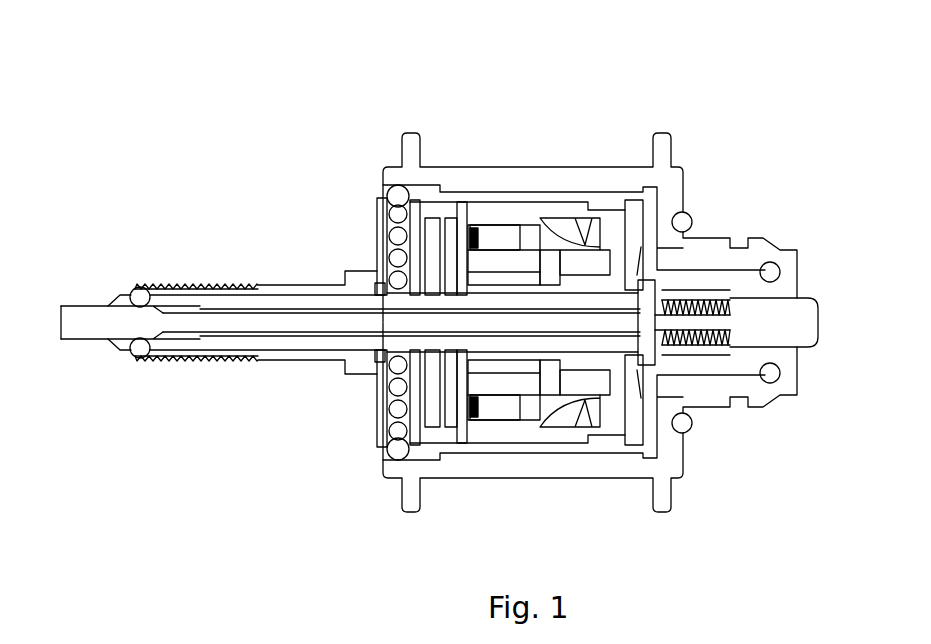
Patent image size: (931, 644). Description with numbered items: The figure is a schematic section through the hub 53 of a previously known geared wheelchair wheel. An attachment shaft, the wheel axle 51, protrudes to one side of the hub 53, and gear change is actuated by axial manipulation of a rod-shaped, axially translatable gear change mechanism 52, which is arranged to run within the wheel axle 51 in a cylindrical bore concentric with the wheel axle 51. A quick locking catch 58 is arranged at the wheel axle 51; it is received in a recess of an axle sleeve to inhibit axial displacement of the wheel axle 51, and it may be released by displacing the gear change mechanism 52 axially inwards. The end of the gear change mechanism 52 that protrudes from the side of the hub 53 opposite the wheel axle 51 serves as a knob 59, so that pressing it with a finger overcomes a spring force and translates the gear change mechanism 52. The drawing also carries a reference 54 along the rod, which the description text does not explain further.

The wheel axle 51 is at (280, 287).
The gear change mechanism 52 is at (300, 322).
The hub 53 is at (453, 125).
The actuating rod 54 is at (320, 312).
The quick locking catch 58 is at (138, 294).
The knob 59 is at (812, 313).